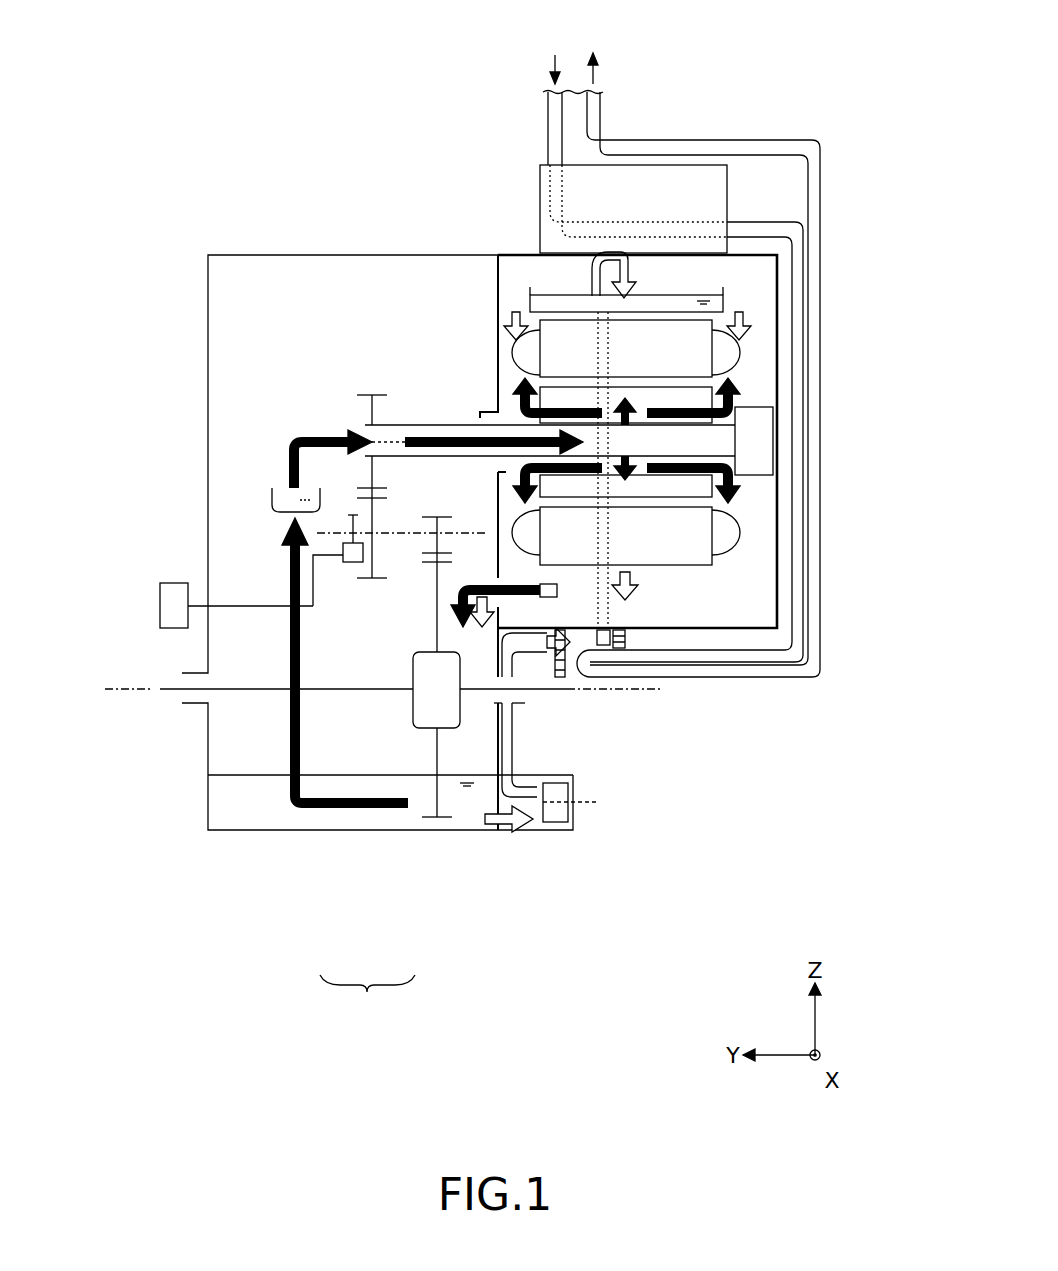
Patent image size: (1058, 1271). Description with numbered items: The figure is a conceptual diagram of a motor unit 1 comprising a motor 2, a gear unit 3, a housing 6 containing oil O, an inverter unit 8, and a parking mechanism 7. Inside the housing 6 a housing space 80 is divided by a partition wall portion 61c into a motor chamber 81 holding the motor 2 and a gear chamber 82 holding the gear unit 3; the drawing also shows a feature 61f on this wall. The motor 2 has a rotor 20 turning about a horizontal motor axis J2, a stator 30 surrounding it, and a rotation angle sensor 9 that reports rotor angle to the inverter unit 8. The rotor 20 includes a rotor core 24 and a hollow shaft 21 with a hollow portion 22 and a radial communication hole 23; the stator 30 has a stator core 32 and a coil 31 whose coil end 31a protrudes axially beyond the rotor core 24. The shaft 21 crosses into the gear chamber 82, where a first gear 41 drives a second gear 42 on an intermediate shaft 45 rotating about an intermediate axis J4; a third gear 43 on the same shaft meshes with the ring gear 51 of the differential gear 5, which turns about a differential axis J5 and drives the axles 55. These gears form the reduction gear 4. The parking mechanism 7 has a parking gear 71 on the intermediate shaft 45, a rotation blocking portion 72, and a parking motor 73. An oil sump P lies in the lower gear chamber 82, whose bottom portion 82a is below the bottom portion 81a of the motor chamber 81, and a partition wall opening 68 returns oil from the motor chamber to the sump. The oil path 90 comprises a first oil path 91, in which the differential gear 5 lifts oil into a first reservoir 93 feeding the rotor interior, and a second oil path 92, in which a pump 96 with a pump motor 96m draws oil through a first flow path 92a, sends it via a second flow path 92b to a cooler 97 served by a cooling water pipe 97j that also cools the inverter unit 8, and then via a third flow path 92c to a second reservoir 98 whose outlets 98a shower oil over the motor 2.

The motor unit 1 is at (782, 105).
The motor 2 is at (760, 318).
The gear unit 3 is at (280, 308).
The reduction gear 4 is at (362, 596).
The differential gear 5 is at (400, 714).
The housing 6 is at (786, 246).
The parking mechanism 7 is at (160, 576).
The inverter unit 8 is at (708, 165).
The rotation angle sensor 9 is at (782, 430).
The rotor 20 is at (740, 380).
The shaft 21 is at (412, 425).
The hollow portion 22 is at (400, 430).
The communication hole 23 is at (740, 480).
The rotor core 24 is at (738, 392).
The stator 30 is at (755, 338).
The coil 31 is at (745, 350).
The coil end 31a is at (742, 532).
The stator core 32 is at (742, 358).
The first gear 41 is at (378, 393).
The second gear 42 is at (372, 580).
The third gear 43 is at (437, 562).
The intermediate shaft 45 is at (402, 532).
The ring gear 51 is at (430, 818).
The axles 55 is at (543, 690).
The partition wall portion 61c is at (490, 330).
The opening in partition wall 61f is at (482, 412).
The partition wall opening 68 is at (510, 604).
The parking gear 71 is at (352, 512).
The rotation blocking portion 72 is at (343, 558).
The parking motor 73 is at (160, 608).
The housing space 80 is at (785, 277).
The motor chamber 81 is at (507, 290).
The bottom portion of the motor chamber 81a is at (697, 630).
The gear chamber 82 is at (412, 298).
The bottom portion of the gear chamber 82a is at (317, 832).
The oil path 90 is at (367, 996).
The first oil path 91 is at (297, 765).
The second oil path 92 is at (480, 748).
The first flow path 92a is at (497, 835).
The second flow path 92b is at (507, 713).
The third flow path 92c is at (597, 590).
The first reservoir 93 is at (272, 498).
The pump 96 is at (556, 823).
The pump motor 96m is at (568, 787).
The cooler 97 is at (583, 678).
The cooling water pipe 97j is at (823, 632).
The second reservoir 98 is at (738, 295).
The outlets 98a is at (530, 300).
The motor axis J2 is at (745, 445).
The intermediate axis J4 is at (466, 530).
The differential axis J5 is at (633, 690).
The oil O is at (467, 815).
The oil sump P is at (200, 810).